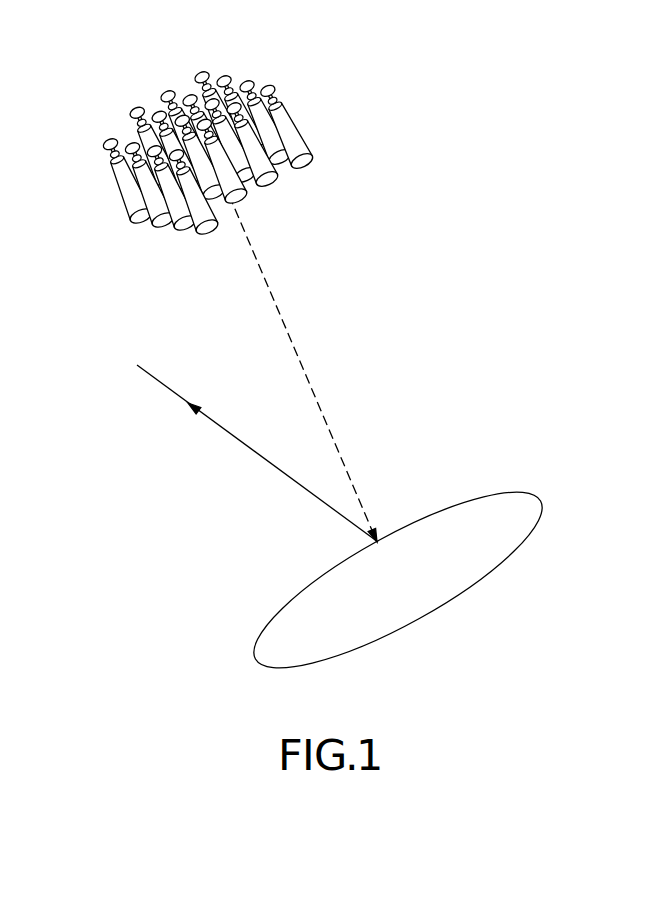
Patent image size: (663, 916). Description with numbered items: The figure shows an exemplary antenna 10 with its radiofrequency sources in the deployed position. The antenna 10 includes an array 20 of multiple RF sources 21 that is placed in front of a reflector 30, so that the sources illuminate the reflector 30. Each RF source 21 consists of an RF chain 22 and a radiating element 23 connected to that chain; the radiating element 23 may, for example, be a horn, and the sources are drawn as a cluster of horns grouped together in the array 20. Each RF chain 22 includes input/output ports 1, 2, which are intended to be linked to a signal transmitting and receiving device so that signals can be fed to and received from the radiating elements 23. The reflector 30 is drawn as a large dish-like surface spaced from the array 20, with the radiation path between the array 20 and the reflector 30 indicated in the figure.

The input/output port 1 is at (108, 140).
The input/output port 2 is at (104, 133).
The antenna 10 is at (385, 298).
The array 20 is at (330, 145).
The RF source 21 is at (365, 1).
The RF chain 22 is at (273, 92).
The radiating element 23 is at (292, 138).
The reflector 30 is at (442, 590).